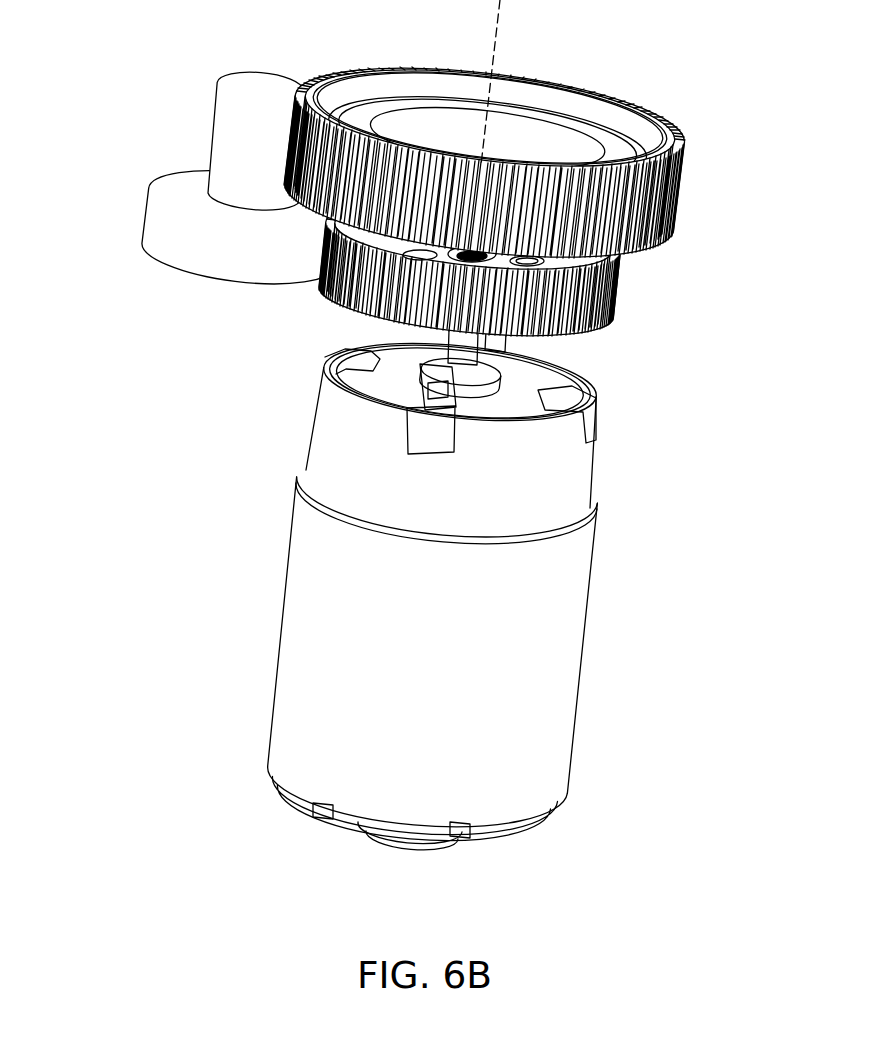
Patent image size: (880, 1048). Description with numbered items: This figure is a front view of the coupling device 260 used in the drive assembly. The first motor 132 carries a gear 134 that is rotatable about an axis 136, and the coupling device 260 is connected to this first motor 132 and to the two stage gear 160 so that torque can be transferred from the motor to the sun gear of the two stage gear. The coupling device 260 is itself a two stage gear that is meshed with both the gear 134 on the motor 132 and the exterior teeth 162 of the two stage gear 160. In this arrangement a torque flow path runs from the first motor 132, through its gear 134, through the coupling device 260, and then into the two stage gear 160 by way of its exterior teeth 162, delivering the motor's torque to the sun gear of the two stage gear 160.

The first motor 132 is at (565, 660).
The gear 134 is at (618, 290).
The axis 136 is at (504, 12).
The two stage gear 160 is at (693, 148).
The exterior teeth 162 is at (680, 186).
The coupling device 260 is at (127, 138).